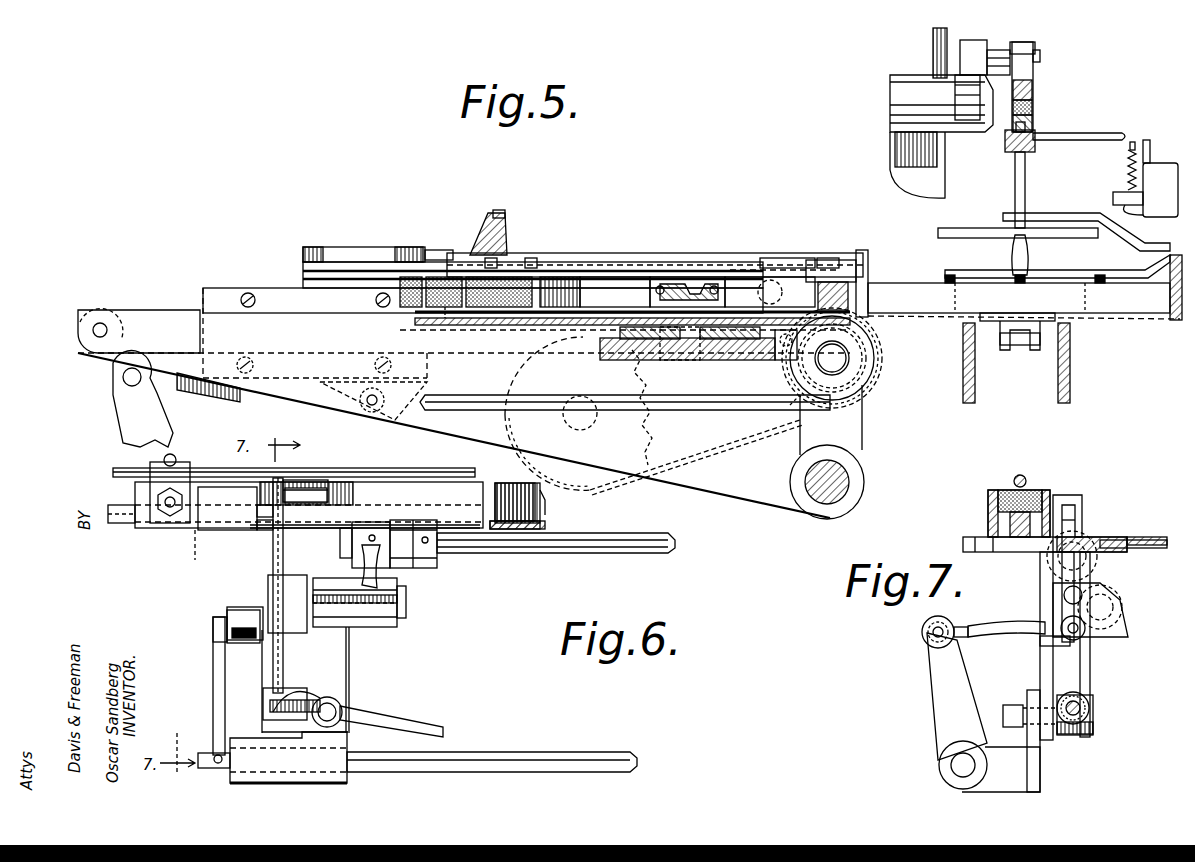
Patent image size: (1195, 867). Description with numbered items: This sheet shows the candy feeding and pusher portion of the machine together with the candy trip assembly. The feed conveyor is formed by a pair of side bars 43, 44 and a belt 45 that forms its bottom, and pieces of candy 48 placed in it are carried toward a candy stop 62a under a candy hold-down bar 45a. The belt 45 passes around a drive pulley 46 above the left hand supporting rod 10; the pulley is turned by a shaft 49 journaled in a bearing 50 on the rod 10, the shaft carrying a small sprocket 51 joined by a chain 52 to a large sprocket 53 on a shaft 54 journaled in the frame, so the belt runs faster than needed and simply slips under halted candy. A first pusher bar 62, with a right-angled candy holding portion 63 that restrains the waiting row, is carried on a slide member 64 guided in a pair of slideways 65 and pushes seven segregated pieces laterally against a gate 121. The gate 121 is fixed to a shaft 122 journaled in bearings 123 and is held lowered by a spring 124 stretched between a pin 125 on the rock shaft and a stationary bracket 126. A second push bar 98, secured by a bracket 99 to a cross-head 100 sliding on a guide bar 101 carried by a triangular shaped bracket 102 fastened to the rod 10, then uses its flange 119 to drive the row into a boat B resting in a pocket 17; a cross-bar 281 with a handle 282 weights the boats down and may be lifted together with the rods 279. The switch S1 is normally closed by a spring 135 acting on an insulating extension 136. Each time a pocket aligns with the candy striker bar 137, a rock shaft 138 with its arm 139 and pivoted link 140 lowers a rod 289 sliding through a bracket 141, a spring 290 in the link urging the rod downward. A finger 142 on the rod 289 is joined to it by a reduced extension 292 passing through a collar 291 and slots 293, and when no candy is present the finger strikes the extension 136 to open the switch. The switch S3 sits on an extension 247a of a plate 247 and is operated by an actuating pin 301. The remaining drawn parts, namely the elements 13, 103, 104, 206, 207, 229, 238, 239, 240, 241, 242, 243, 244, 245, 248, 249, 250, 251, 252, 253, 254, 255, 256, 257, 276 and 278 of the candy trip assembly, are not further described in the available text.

In FIG. 5, the left hand supporting rod 10 is at (860, 468).
In FIG. 5, the bracket 13 is at (1033, 352).
In FIG. 5, the pocket 17 is at (1088, 300).
In FIG. 5, the side bar 43 is at (498, 485).
In FIG. 6, the side bar 43 is at (455, 483).
In FIG. 5, the side bar 44 is at (545, 500).
In FIG. 5, the belt 45 is at (398, 313).
In FIG. 6, the belt 45 is at (128, 517).
In FIG. 7, the belt 45 is at (1010, 522).
In FIG. 5, the candy hold-down bar 45a is at (690, 284).
In FIG. 5, the drive pulley 46 is at (872, 365).
In FIG. 5, the pieces of candy 48 is at (783, 277).
In FIG. 5, the shaft 49 is at (834, 358).
In FIG. 5, the bearing 50 is at (863, 426).
In FIG. 5, the small sprocket 51 is at (785, 375).
In FIG. 5, the chain 52 is at (790, 425).
In FIG. 5, the large sprocket 53 is at (652, 437).
In FIG. 5, the shaft 54 is at (590, 422).
In FIG. 5, the first pusher bar 62 is at (640, 290).
In FIG. 5, the candy stop 62a is at (855, 280).
In FIG. 5, the candy holding portion 63 is at (560, 290).
In FIG. 5, the slide member 64 is at (690, 284).
In FIG. 5, the slideways 65 is at (590, 330).
In FIG. 5, the push bar 98 is at (303, 258).
In FIG. 7, the push bar 98 is at (1005, 490).
In FIG. 5, the bracket 99 is at (303, 276).
In FIG. 5, the cross-head 100 is at (213, 288).
In FIG. 5, the guide bar 101 is at (78, 310).
In FIG. 5, the triangular shaped bracket 102 is at (712, 482).
In FIG. 5, the lever 103 is at (250, 396).
In FIG. 5, the link 104 is at (118, 420).
In FIG. 5, the flange 119 is at (492, 325).
In FIG. 5, the gate 121 is at (612, 285).
In FIG. 5, the shaft 122 is at (756, 280).
In FIG. 5, the bearings 123 is at (543, 280).
In FIG. 5, the spring 124 is at (503, 228).
In FIG. 5, the pin 125 is at (505, 246).
In FIG. 5, the stationary bracket 126 is at (480, 242).
In FIG. 5, the spring 135 is at (1128, 175).
In FIG. 5, the insulating extension 136 is at (1140, 210).
In FIG. 5, the candy striker bar 137 is at (957, 228).
In FIG. 5, the rock shaft 138 is at (1033, 92).
In FIG. 5, the arm 139 is at (978, 48).
In FIG. 5, the link 140 is at (1033, 104).
In FIG. 5, the bracket 141 is at (1068, 213).
In FIG. 5, the finger 142 is at (1125, 133).
In FIG. 5, the boat B is at (1137, 305).
In FIG. 5, the switch S1 is at (1163, 178).
In FIG. 6, the switch S3 is at (183, 526).
In FIG. 6, the pin 206 is at (265, 545).
In FIG. 7, the pin 206 is at (1042, 660).
In FIG. 6, the block 207 is at (227, 508).
In FIG. 6, the rod 229 is at (493, 553).
In FIG. 6, the rod 238 is at (498, 752).
In FIG. 7, the rod 238 is at (960, 765).
In FIG. 6, the arm 239 is at (213, 685).
In FIG. 7, the arm 239 is at (932, 685).
In FIG. 6, the link 240 is at (236, 645).
In FIG. 7, the link 240 is at (1000, 630).
In FIG. 6, the bar 241 is at (275, 560).
In FIG. 7, the bar 241 is at (1090, 666).
In FIG. 6, the block 242 is at (265, 705).
In FIG. 7, the block 242 is at (1078, 695).
In FIG. 6, the spring 243 is at (322, 688).
In FIG. 7, the spring 243 is at (1090, 703).
In FIG. 6, the lever 244 is at (415, 724).
In FIG. 6, the collar 245 is at (335, 704).
In FIG. 7, the collar 245 is at (1093, 726).
In FIG. 6, the plate 247 is at (190, 512).
In FIG. 7, the plate 247 is at (1167, 537).
In FIG. 6, the extension 247a is at (225, 535).
In FIG. 7, the extension 247a is at (1105, 532).
In FIG. 6, the base 248 is at (347, 744).
In FIG. 7, the base 248 is at (1040, 762).
In FIG. 7, the pivot 249 is at (1098, 548).
In FIG. 6, the cylinder 250 is at (405, 568).
In FIG. 6, the cylinder 251 is at (400, 622).
In FIG. 7, the cylinder 251 is at (1100, 583).
In FIG. 6, the pivot 252 is at (345, 632).
In FIG. 7, the pivot 252 is at (1112, 600).
In FIG. 6, the block 253 is at (287, 600).
In FIG. 7, the block 253 is at (1105, 634).
In FIG. 6, the plate 254 is at (270, 565).
In FIG. 7, the plate 254 is at (1127, 540).
In FIG. 6, the bracket 255 is at (250, 478).
In FIG. 7, the bracket 255 is at (1062, 497).
In FIG. 6, the holder 256 is at (313, 490).
In FIG. 7, the holder 256 is at (988, 498).
In FIG. 6, the arm 257 is at (325, 503).
In FIG. 7, the arm 257 is at (1068, 530).
In FIG. 6, the rod 276 is at (405, 468).
In FIG. 7, the rod 276 is at (1023, 476).
In FIG. 6, the pin 278 is at (210, 542).
In FIG. 5, the rods 279 is at (990, 276).
In FIG. 5, the cross-bar 281 is at (1024, 301).
In FIG. 5, the handle 282 is at (1060, 265).
In FIG. 5, the rod 289 is at (1015, 185).
In FIG. 5, the spring 290 is at (1033, 110).
In FIG. 5, the collar 291 is at (1008, 148).
In FIG. 5, the reduced extension 292 is at (1028, 135).
In FIG. 5, the slots 293 is at (1034, 122).
In FIG. 6, the actuating pin 301 is at (300, 512).